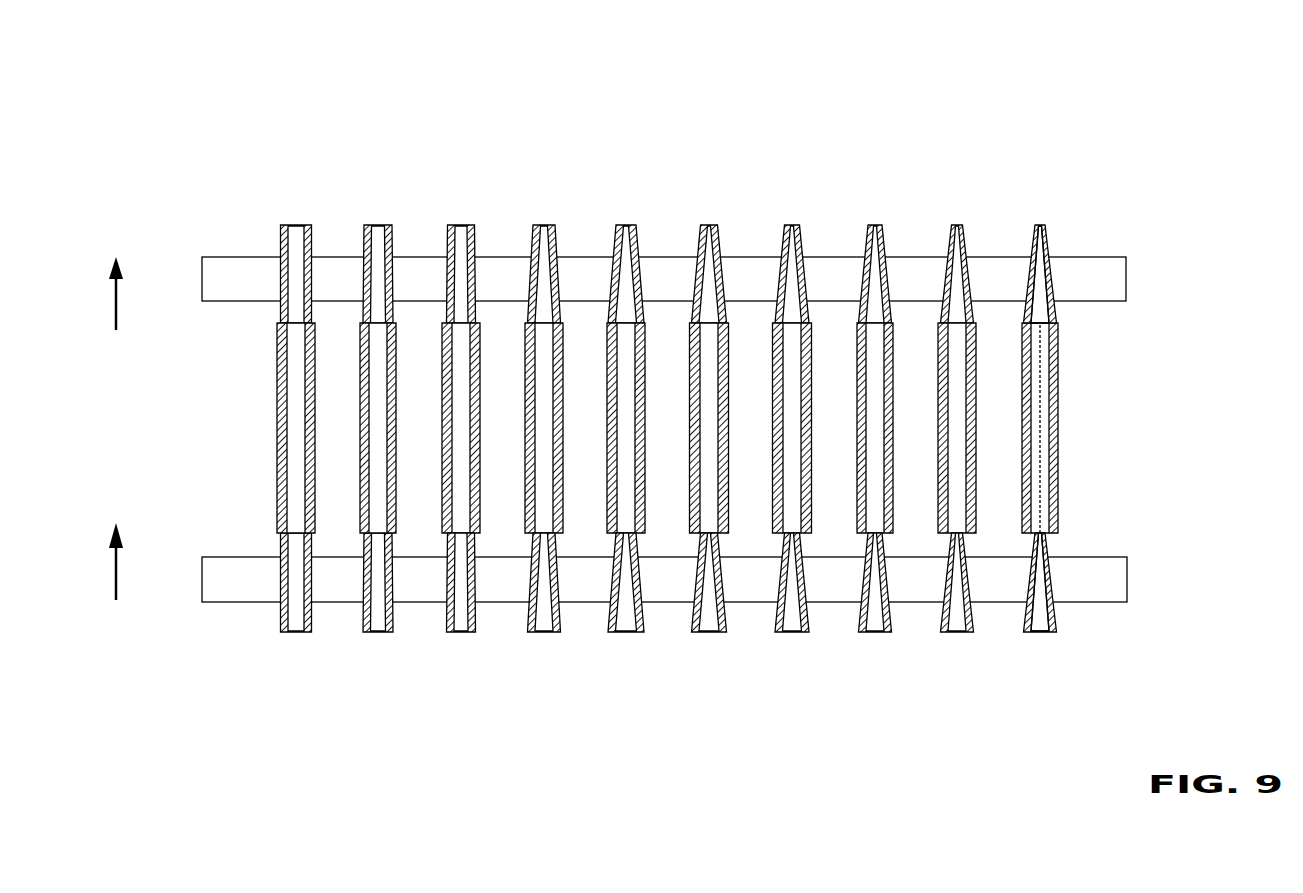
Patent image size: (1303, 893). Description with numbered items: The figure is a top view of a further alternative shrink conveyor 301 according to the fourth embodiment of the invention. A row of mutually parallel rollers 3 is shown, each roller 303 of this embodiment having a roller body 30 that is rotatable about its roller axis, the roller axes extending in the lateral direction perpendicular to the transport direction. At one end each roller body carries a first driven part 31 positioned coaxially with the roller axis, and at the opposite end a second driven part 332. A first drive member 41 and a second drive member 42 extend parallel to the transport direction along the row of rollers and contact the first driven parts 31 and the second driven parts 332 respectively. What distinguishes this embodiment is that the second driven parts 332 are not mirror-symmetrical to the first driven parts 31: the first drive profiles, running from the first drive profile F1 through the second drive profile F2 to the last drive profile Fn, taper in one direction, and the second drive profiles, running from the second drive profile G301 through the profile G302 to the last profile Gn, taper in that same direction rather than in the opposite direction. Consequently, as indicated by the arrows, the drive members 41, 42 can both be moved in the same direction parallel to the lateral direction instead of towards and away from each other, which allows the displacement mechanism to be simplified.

The shrink conveyor 301 is at (105, 102).
The first drive member 41 is at (216, 277).
The second drive member 42 is at (212, 578).
The roller 3 is at (615, 343).
The roller body 30 is at (1114, 427).
The roller 303 is at (372, 358).
The first driven part 31 is at (1042, 296).
The second driven part 332 is at (1048, 574).
The first drive profile Fn is at (312, 277).
The second drive profile Gn is at (283, 575).
The first drive profile F1 is at (1050, 275).
The first drive profile F2 is at (970, 285).
The second drive profile G301 is at (1050, 585).
The second drive profile G302 is at (968, 575).